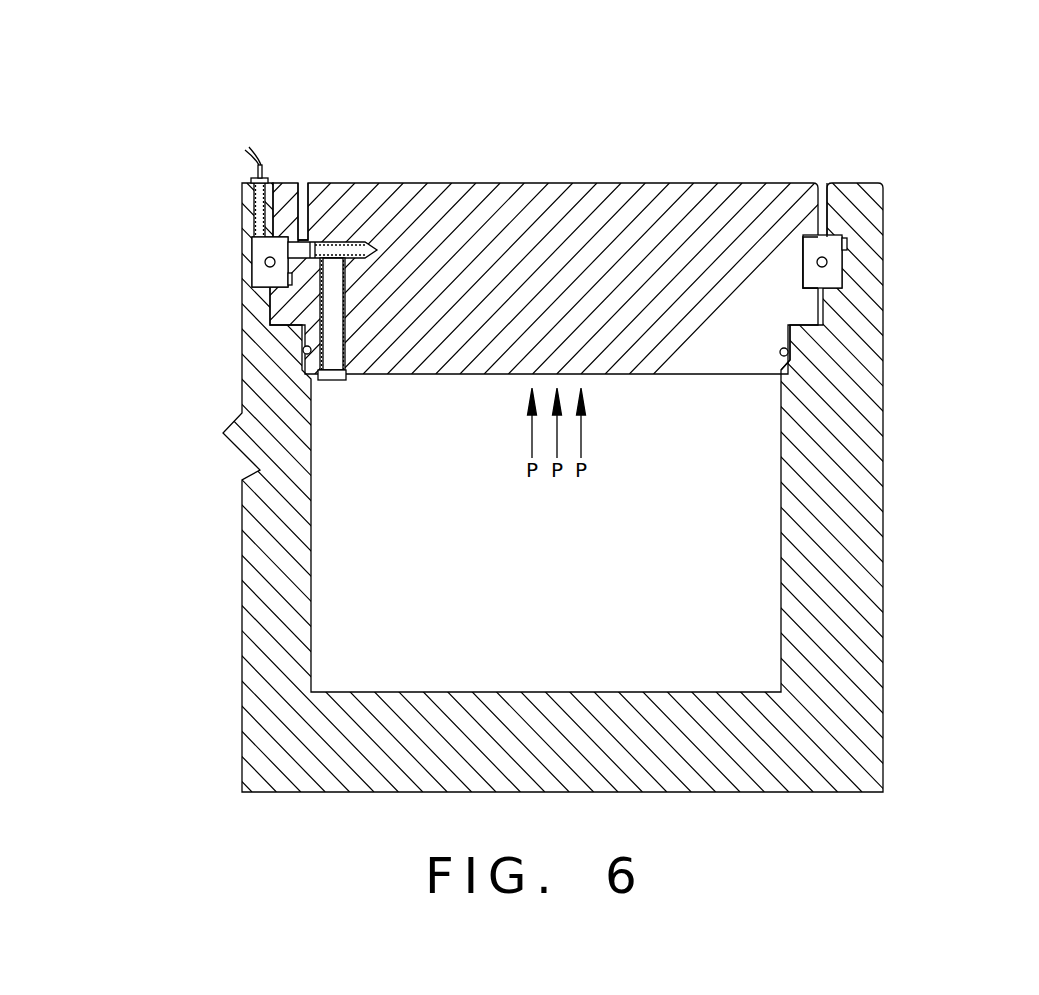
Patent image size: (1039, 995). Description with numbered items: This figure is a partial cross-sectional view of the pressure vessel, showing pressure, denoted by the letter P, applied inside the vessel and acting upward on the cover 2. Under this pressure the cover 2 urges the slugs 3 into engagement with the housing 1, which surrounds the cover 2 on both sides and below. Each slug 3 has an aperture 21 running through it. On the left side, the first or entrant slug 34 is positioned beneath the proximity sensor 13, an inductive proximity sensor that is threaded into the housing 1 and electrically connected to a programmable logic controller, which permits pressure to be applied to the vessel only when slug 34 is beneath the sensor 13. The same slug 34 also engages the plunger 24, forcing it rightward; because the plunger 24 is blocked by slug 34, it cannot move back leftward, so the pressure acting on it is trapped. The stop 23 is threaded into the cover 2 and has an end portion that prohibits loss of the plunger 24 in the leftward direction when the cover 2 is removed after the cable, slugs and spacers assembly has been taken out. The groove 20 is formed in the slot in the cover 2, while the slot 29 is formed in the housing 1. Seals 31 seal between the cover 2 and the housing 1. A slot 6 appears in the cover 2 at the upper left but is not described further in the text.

The housing 1 is at (825, 672).
The cover 2 is at (625, 215).
The slugs 3 is at (822, 245).
The slot 6 is at (305, 183).
The proximity sensor 13 is at (262, 160).
The groove 20 is at (802, 278).
The aperture 21 is at (835, 275).
The stop 23 is at (330, 382).
The plunger 24 is at (323, 250).
The slot 29 is at (845, 242).
The seals 31 is at (782, 376).
The first slug 34 is at (263, 245).